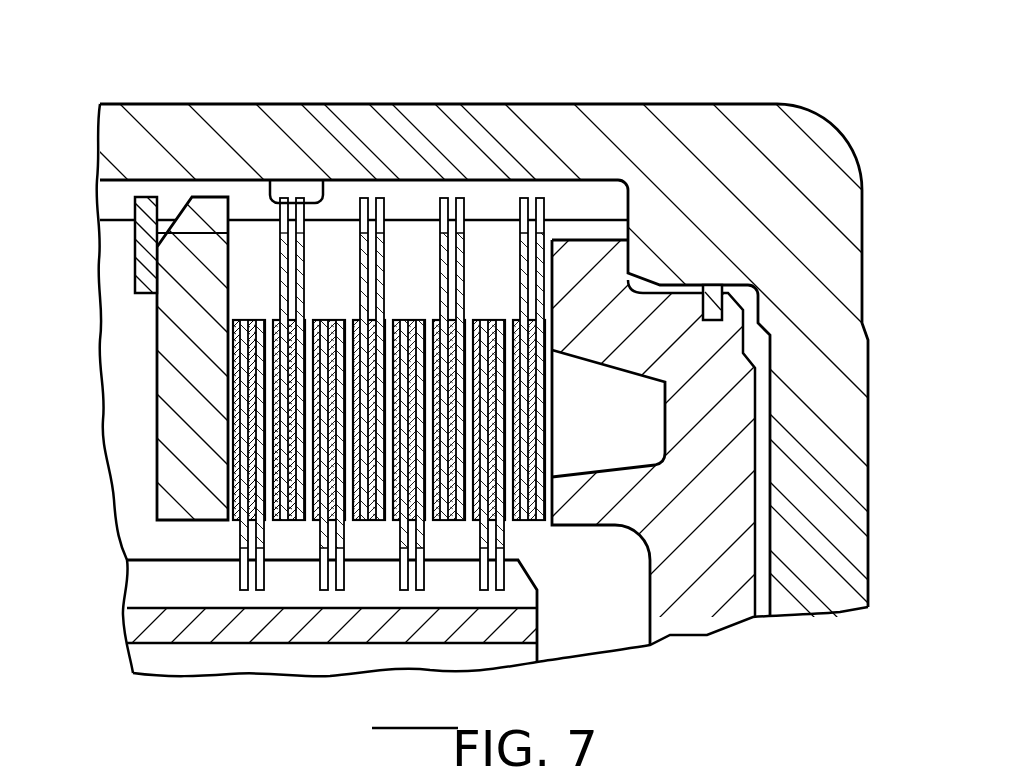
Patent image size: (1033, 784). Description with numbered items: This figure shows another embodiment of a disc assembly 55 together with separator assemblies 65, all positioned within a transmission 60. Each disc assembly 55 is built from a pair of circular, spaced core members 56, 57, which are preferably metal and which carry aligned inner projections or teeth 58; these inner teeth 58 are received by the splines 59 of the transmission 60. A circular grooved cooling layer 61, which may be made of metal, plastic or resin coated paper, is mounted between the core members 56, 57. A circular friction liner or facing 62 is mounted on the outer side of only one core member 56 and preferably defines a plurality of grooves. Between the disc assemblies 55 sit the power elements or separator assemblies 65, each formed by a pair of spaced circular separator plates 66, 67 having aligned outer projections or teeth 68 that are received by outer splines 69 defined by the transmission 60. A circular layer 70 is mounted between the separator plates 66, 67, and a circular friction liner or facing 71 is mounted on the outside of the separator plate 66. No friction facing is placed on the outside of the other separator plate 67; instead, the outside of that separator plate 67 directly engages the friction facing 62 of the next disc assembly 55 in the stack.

The disc assembly 55 is at (214, 325).
The core member 56 is at (240, 437).
The core member 57 is at (290, 484).
The inner projections or teeth 58 is at (262, 580).
The splines 59 is at (366, 587).
The transmission 60 is at (878, 345).
The circular grooved cooling layer 61 is at (253, 367).
The circular friction liner or facing 62 is at (240, 400).
The power elements or separator assemblies 65 is at (272, 266).
The separator plate 66 is at (278, 252).
The separator plate 67 is at (307, 282).
The outer projections or teeth 68 is at (323, 180).
The outer splines 69 is at (480, 225).
The circular layer 70 is at (297, 352).
The circular friction liner or facing 71 is at (278, 498).